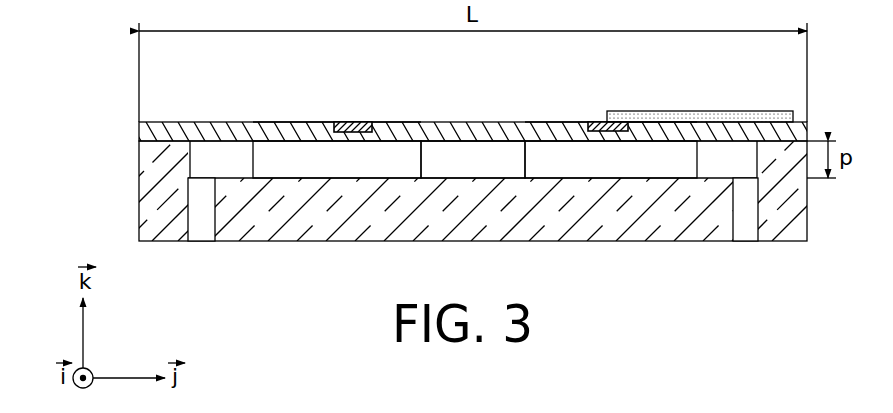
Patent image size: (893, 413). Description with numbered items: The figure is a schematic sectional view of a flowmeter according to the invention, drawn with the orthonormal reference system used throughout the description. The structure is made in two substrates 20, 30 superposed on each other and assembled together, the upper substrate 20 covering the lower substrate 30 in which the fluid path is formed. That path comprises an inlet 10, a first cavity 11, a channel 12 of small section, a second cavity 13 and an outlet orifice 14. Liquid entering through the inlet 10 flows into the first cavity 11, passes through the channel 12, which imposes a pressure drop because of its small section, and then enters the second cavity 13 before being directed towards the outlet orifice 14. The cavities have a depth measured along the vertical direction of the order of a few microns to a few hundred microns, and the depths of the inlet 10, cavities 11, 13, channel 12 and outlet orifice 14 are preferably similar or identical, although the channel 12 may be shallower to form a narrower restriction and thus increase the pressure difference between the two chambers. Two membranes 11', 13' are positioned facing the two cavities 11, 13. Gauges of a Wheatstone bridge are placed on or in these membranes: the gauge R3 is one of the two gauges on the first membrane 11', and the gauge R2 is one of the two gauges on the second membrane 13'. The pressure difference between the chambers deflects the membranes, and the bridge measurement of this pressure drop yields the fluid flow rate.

The inlet 10 is at (207, 222).
The first cavity 11 is at (337, 159).
The channel 12 is at (473, 159).
The second cavity 13 is at (611, 159).
The outlet orifice 14 is at (740, 223).
The first membrane 11' is at (318, 91).
The second membrane 13' is at (600, 90).
The first substrate 20 is at (158, 130).
The second substrate 30 is at (158, 190).
The gauge R2 is at (605, 122).
The gauge R3 is at (343, 122).